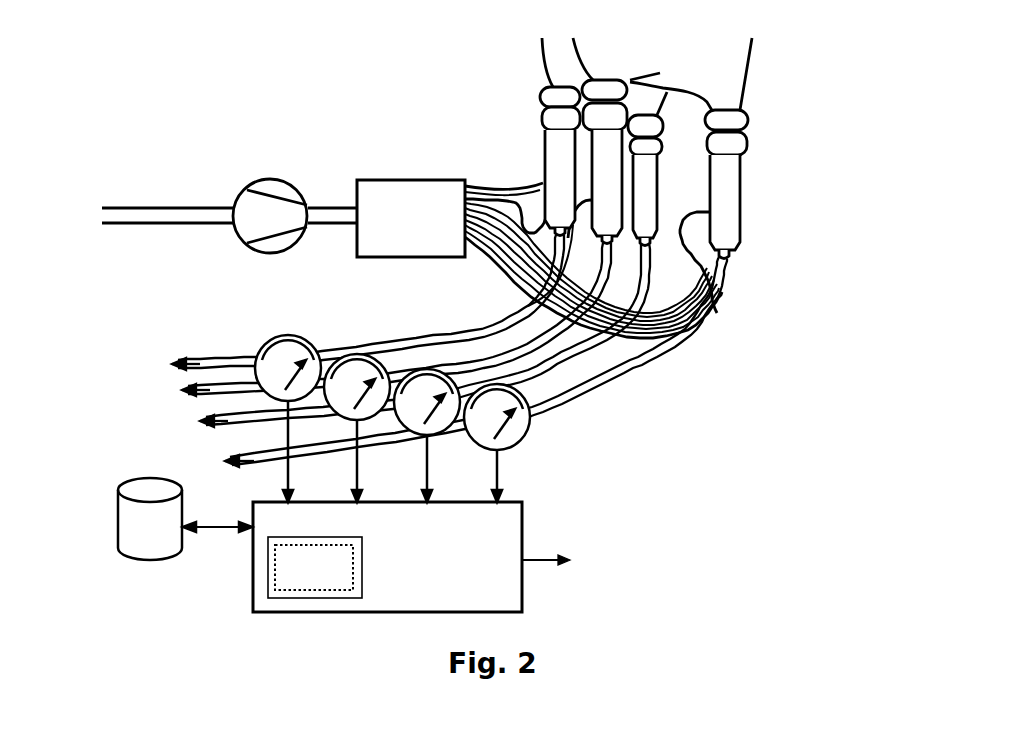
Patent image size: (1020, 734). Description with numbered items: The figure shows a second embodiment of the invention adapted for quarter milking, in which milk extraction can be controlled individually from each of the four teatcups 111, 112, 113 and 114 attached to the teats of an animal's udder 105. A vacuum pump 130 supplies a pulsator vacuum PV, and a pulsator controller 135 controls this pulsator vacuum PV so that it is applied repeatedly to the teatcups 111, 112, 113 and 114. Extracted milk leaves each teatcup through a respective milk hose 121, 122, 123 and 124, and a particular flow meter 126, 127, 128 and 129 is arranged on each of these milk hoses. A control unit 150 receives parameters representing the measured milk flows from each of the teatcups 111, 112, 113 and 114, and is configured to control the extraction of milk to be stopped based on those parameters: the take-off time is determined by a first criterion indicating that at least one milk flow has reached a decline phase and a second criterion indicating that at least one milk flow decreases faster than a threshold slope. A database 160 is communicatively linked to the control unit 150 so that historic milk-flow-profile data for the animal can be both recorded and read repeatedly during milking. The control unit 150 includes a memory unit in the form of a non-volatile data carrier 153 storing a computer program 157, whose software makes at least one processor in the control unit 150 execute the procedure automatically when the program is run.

The udder 105 is at (560, 53).
The teatcup 111 is at (553, 147).
The teatcup 112 is at (607, 192).
The teatcup 113 is at (722, 215).
The teatcup 114 is at (648, 185).
The milk hose 121 is at (587, 382).
The milk hose 122 is at (613, 363).
The milk hose 123 is at (722, 305).
The milk hose 124 is at (603, 340).
The flow meter 126 is at (260, 352).
The flow meter 127 is at (332, 353).
The flow meter 128 is at (423, 380).
The flow meter 129 is at (520, 425).
The vacuum pump 130 is at (237, 198).
The pulsator vacuum PV is at (330, 215).
The pulsator controller 135 is at (402, 180).
The control unit 150 is at (522, 593).
The non-volatile data carrier 153 is at (268, 560).
The computer program 157 is at (275, 580).
The database 160 is at (150, 490).